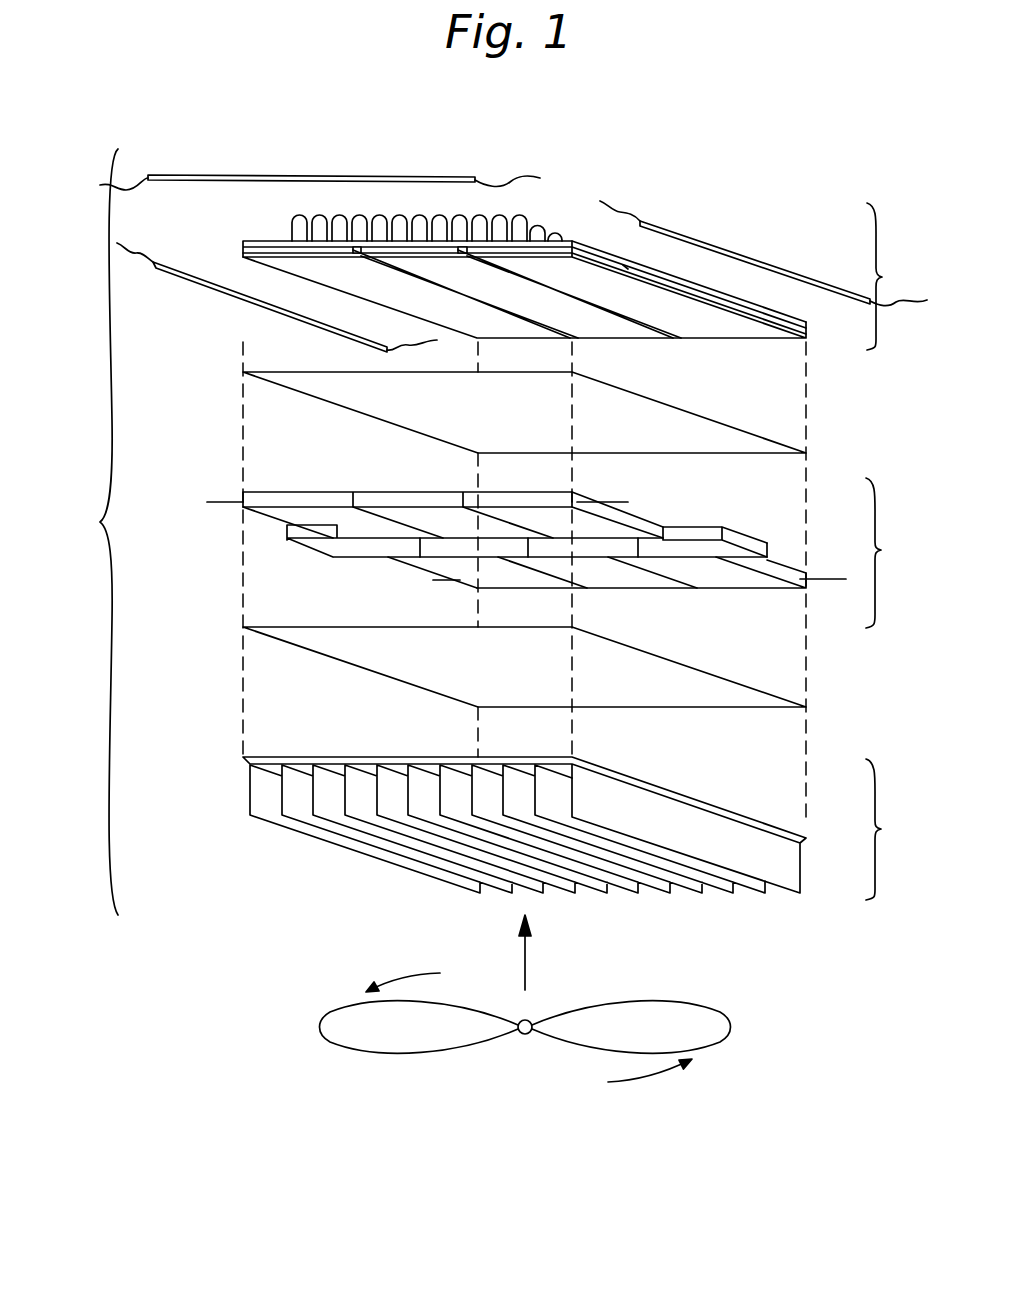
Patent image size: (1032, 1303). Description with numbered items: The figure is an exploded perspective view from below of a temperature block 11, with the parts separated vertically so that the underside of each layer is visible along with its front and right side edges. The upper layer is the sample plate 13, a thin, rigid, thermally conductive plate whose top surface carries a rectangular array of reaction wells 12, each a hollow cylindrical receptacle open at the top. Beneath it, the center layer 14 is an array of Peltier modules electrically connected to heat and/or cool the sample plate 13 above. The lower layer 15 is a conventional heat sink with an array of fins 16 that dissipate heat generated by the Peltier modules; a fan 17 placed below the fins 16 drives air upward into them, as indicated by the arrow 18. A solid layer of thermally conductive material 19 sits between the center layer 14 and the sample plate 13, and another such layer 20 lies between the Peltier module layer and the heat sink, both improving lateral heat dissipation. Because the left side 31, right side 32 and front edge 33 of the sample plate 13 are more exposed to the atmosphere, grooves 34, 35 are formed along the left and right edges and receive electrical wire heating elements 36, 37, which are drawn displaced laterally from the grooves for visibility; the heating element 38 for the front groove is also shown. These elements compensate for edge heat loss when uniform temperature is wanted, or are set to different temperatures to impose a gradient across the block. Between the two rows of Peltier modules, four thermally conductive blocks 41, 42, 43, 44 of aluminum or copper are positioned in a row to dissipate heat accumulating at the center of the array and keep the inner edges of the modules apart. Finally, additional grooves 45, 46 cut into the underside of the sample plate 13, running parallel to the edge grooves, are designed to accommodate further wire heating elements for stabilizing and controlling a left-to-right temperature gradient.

The temperature block 11 is at (87, 532).
The reaction wells 12 is at (477, 253).
The sample plate 13 is at (895, 276).
The center layer 14 is at (895, 553).
The lower layer 15 is at (583, 853).
The fins 16 is at (683, 890).
The fan 17 is at (415, 1050).
The arrow 18 is at (527, 970).
The layer of thermally conductive material 19 is at (662, 437).
The layer of thermally conductive material 20 is at (625, 697).
The left side edge 31 is at (322, 285).
The right side edge 32 is at (678, 278).
The front edge 33 is at (518, 218).
The groove 34 is at (243, 252).
The groove 35 is at (623, 267).
The electrical wire heating element 36 is at (207, 287).
The electrical wire heating element 37 is at (760, 260).
The heating element 38 is at (250, 175).
The block 41 is at (348, 548).
The block 42 is at (485, 548).
The block 43 is at (583, 553).
The block 44 is at (695, 550).
The groove 45 is at (537, 322).
The groove 46 is at (657, 324).